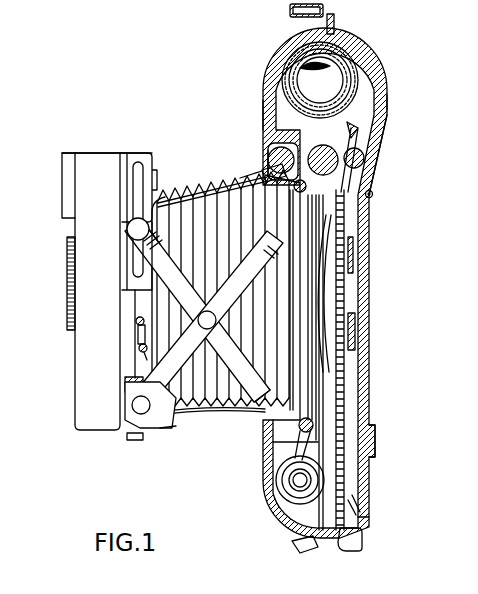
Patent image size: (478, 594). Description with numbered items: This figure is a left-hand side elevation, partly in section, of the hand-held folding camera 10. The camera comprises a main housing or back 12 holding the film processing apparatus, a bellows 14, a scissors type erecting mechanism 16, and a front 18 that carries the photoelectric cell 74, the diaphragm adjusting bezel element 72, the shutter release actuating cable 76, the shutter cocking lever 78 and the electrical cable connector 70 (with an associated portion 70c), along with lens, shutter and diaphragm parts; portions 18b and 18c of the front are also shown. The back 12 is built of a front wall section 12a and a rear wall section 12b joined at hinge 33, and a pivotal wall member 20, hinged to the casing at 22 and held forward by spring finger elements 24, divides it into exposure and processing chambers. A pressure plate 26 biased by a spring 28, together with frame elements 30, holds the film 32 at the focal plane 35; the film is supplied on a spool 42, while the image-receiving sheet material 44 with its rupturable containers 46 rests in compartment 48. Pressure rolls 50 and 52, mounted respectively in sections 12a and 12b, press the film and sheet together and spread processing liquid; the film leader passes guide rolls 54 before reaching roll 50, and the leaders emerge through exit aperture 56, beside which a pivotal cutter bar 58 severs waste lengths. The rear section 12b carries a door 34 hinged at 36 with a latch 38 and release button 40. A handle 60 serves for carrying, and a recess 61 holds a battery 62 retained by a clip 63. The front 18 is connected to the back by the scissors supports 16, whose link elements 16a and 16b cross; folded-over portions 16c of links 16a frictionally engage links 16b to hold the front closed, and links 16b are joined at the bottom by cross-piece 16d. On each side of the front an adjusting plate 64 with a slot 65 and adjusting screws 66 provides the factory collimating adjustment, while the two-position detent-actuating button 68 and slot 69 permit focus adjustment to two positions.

The camera 10 is at (400, 81).
The main housing or back 12 is at (373, 40).
The front wall section 12a is at (268, 66).
The rear wall section 12b is at (381, 151).
The bellows 14 is at (212, 420).
The scissors type erecting mechanism 16 is at (167, 226).
The link element 16a is at (186, 283).
The link element 16b is at (190, 363).
The portion of link element 16a 16c is at (249, 401).
The cross-piece 16d is at (172, 432).
The front 18 is at (73, 402).
The bracket flange 18b is at (148, 160).
The bracket pad 18c is at (125, 386).
The pivotal wall member 20 is at (331, 425).
The hinge connection 22 is at (371, 522).
The spring finger elements 24 is at (372, 333).
The pressure plate 26 is at (320, 292).
The spring 28 is at (351, 252).
The frame elements 30 is at (335, 212).
The film material 32 is at (327, 373).
The hinge 33 is at (334, 17).
The door 34 is at (371, 351).
The focal plane 35 is at (300, 305).
The hinge 36 is at (373, 196).
The latch 38 is at (357, 507).
The release button 40 is at (377, 444).
The spool 42 is at (311, 480).
The image-receiving sheet material 44 is at (338, 52).
The rupturable containers 46 is at (352, 127).
The compartment or subsection 48 is at (364, 70).
The pressure roll 50 is at (322, 146).
The pressure roll 52 is at (363, 157).
The guide rolls 54 is at (262, 176).
The exit aperture 56 is at (292, 541).
The pivotal cutter bar 58 is at (360, 542).
The handle 60 is at (298, 14).
The recess 61 is at (259, 161).
The battery 62 is at (266, 156).
The clip 63 is at (268, 150).
The adjusting plate 64 is at (131, 355).
The slot 65 is at (138, 312).
The adjusting screws 66 is at (141, 347).
The two-position detent-actuating button 68 is at (146, 222).
The slot 69 is at (133, 172).
The electrical cable connector 70 is at (214, 204).
The rim end 70c is at (223, 163).
The diaphragm adjusting bezel element 72 is at (68, 285).
The photoelectric cell 74 is at (67, 186).
The shutter release actuating cable 76 is at (164, 430).
The shutter cocking lever 78 is at (136, 441).